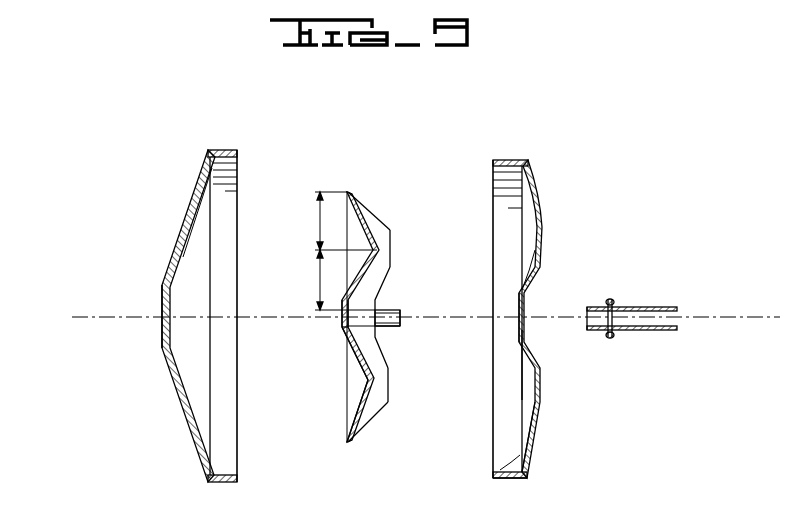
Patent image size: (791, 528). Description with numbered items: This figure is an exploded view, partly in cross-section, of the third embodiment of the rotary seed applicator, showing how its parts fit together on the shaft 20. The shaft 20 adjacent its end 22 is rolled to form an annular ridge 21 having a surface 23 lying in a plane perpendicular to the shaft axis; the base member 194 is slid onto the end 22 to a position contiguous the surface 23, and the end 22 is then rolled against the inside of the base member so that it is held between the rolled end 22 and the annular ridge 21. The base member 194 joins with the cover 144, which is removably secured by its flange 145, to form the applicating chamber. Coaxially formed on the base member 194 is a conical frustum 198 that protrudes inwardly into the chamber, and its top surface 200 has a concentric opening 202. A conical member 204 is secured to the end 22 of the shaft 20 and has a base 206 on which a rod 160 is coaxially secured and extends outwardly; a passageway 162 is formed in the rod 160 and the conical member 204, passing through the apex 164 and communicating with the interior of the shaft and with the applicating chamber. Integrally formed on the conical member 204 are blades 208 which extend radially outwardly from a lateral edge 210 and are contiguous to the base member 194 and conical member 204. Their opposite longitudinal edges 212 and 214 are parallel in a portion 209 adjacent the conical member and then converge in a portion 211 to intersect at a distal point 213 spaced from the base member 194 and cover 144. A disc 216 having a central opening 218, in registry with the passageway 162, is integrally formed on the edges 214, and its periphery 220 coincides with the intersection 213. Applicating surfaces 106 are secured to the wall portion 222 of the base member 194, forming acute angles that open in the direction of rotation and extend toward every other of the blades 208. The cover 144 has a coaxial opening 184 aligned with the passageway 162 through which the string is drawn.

The shaft 20 is at (660, 332).
The annular ridge 21 is at (612, 336).
The end 22 is at (587, 322).
The surface 23 is at (608, 336).
The applicating surfaces 106 is at (518, 467).
The cover 144 is at (205, 183).
The flange 145 is at (229, 150).
The rod 160 is at (402, 318).
The passageway 162 is at (398, 327).
The apex 164 is at (347, 333).
The coaxial opening 184 is at (167, 318).
The base member 194 is at (536, 184).
The conical frustum 198 is at (541, 260).
The top surface 200 is at (522, 330).
The concentric opening 202 is at (527, 318).
The conical member 204 is at (377, 294).
The base 206 is at (385, 310).
The blades 208 is at (372, 210).
The portion 209 is at (327, 280).
The lateral edge 210 is at (343, 312).
The portion 211 is at (342, 221).
The longitudinal edge 212 is at (391, 236).
The distal point 213 is at (349, 191).
The longitudinal edge 214 is at (368, 240).
The disc 216 is at (357, 413).
The central opening 218 is at (345, 323).
The periphery 220 is at (352, 446).
The wall portion 222 is at (528, 476).